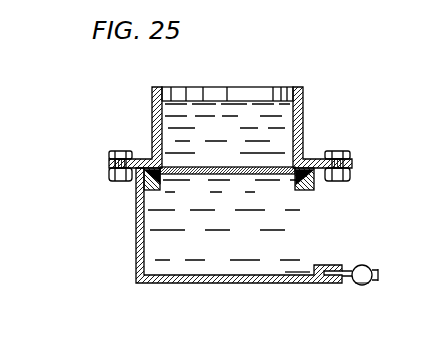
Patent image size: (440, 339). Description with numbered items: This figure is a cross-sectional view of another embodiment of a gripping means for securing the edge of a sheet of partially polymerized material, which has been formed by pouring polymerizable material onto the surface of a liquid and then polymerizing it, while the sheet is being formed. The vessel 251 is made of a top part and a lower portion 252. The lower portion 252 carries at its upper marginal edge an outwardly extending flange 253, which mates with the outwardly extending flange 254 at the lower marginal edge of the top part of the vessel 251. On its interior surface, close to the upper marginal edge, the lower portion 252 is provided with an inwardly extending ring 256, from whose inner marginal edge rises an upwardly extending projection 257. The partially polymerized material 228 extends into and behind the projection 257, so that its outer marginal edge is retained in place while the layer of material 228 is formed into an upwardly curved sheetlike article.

The vessel 251 is at (123, 108).
The partially polymerized material 228 is at (278, 168).
The lower portion 252 is at (135, 260).
The outwardly extending flange 253 is at (108, 174).
The outwardly extending flange 254 is at (108, 160).
The inwardly extending ring 256 is at (149, 190).
The upwardly extending projection 257 is at (135, 195).